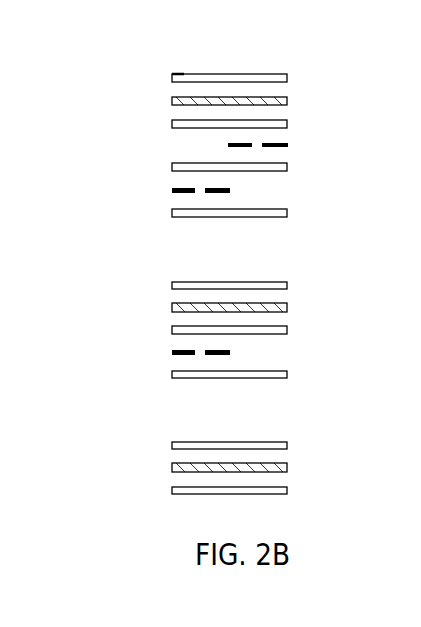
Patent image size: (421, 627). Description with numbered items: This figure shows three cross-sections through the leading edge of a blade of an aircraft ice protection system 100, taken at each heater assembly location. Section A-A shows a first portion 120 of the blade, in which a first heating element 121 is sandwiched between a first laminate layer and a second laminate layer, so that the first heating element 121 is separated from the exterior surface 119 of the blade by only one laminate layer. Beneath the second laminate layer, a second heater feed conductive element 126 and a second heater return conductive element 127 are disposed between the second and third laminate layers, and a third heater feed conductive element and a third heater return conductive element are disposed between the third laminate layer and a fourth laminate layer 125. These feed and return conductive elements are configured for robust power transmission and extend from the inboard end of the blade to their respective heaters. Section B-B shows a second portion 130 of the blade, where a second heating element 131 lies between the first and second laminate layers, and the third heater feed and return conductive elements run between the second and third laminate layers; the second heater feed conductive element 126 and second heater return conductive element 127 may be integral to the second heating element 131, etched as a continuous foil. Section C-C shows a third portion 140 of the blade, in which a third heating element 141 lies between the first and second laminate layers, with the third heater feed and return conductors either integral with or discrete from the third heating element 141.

The ice protection system 100 is at (0, 343).
The exterior surface 119 is at (182, 74).
The first portion 120 is at (84, 94).
The first heating element 121 is at (276, 101).
The fourth laminate layer 125 is at (180, 213).
The second heater feed conductive element 126 is at (228, 145).
The second heater return conductive element 127 is at (286, 146).
The second portion 130 is at (91, 298).
The second heating element 131 is at (276, 308).
The third portion 140 is at (79, 460).
The third heating element 141 is at (276, 468).